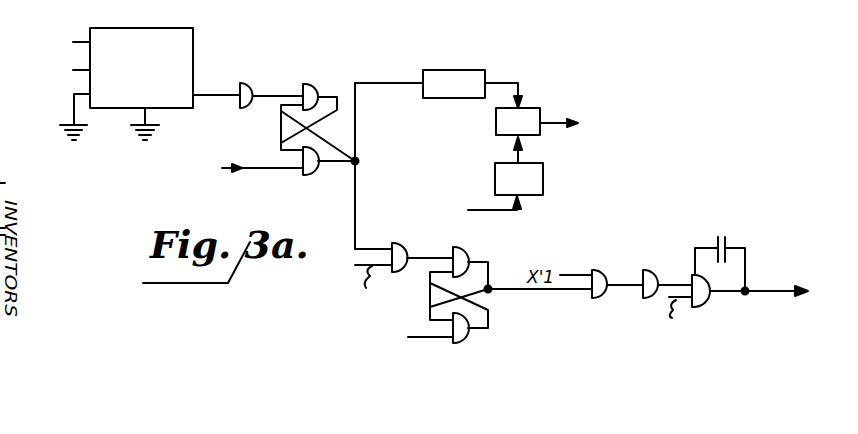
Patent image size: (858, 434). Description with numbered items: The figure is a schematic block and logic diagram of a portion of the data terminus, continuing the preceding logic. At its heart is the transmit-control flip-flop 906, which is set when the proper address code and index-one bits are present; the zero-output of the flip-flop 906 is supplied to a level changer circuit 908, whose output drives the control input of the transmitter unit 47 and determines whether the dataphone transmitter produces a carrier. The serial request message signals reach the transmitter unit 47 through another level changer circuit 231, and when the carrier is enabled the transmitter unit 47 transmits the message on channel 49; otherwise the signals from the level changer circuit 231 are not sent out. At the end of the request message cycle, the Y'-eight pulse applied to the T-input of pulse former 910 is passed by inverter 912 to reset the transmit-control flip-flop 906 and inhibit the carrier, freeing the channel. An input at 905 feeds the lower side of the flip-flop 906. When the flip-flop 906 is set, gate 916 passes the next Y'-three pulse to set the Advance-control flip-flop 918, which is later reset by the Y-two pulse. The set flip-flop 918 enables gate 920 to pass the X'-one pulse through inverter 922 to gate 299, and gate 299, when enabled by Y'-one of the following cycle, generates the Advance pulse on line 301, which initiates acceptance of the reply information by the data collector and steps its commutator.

The pulse former 910 is at (193, 32).
The inverter 912 is at (247, 83).
The input line 905 is at (272, 167).
The transmit-control flip-flop 906 is at (308, 174).
The level changer circuit 908 is at (438, 89).
The transmitter unit 47 is at (540, 110).
The channel 49 is at (578, 123).
The level changer circuit 231 is at (505, 186).
The gate 916 is at (398, 243).
The Advance-control flip-flop 918 is at (470, 233).
The gate 920 is at (595, 270).
The inverter 922 is at (646, 270).
The gate 299 is at (703, 304).
The line 301 is at (773, 290).